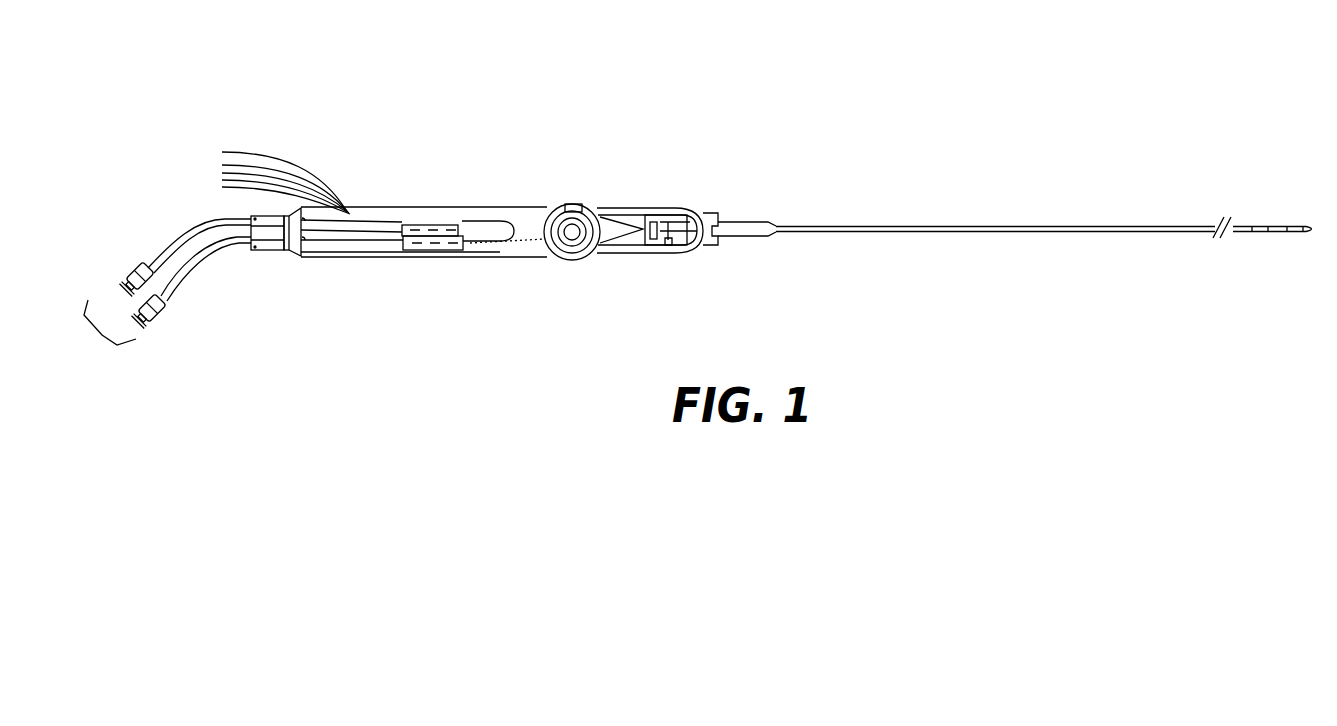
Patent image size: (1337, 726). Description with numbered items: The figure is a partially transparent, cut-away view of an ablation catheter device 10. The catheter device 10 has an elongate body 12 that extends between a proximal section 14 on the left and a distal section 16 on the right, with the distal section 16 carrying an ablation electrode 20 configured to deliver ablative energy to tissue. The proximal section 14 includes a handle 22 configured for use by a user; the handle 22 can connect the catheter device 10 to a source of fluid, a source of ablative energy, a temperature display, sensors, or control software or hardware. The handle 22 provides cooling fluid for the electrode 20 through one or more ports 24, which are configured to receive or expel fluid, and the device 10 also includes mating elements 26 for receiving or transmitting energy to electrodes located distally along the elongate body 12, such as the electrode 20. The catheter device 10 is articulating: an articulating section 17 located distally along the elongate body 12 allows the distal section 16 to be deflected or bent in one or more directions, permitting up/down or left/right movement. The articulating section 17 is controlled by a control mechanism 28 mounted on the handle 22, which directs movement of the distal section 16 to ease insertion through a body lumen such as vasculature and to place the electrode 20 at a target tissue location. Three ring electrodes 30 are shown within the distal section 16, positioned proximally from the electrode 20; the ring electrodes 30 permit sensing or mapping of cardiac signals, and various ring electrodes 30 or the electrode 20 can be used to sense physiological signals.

The ablation catheter device 10 is at (913, 120).
The elongate body 12 is at (910, 233).
The proximal section 14 is at (512, 175).
The distal section 16 is at (1209, 136).
The articulating section 17 is at (1168, 319).
The ablation electrode 20 is at (1315, 248).
The handle 22 is at (465, 258).
The ports 24 is at (103, 337).
The mating elements 26 is at (243, 122).
The control mechanism 28 is at (576, 229).
The ring electrodes 30 is at (1260, 226).